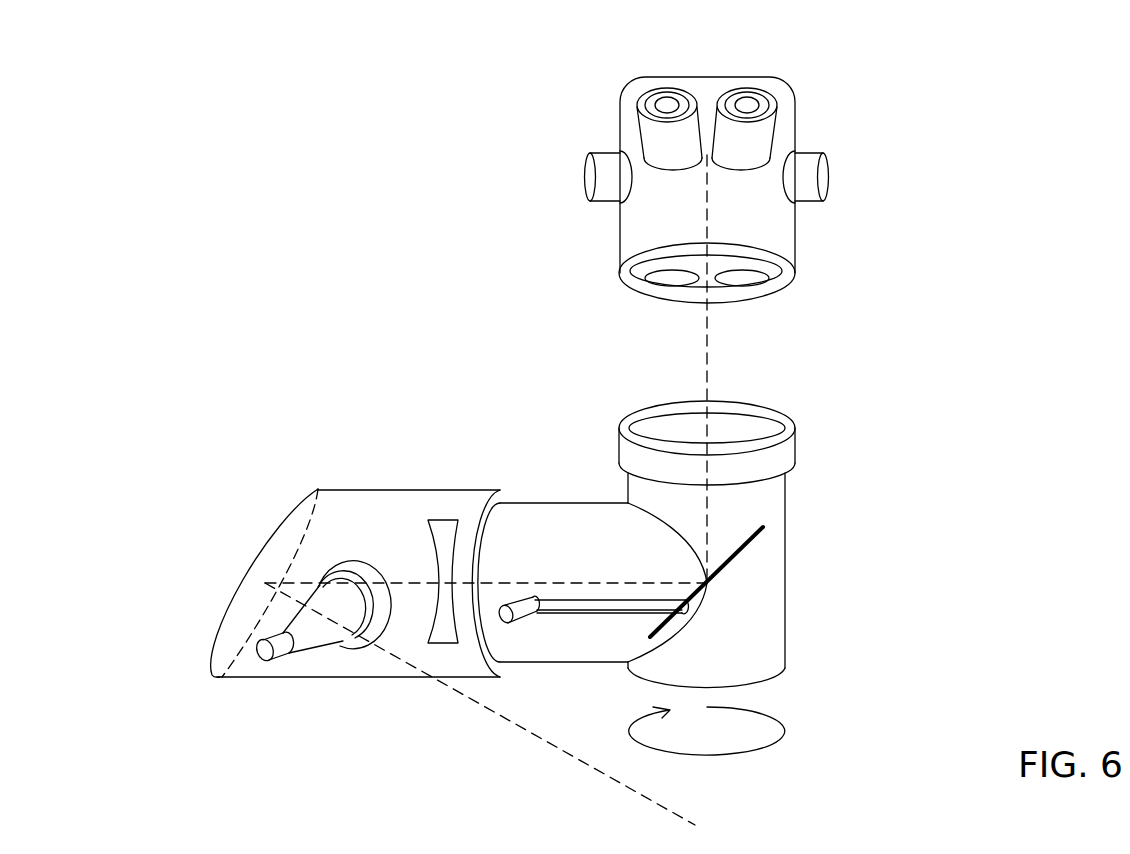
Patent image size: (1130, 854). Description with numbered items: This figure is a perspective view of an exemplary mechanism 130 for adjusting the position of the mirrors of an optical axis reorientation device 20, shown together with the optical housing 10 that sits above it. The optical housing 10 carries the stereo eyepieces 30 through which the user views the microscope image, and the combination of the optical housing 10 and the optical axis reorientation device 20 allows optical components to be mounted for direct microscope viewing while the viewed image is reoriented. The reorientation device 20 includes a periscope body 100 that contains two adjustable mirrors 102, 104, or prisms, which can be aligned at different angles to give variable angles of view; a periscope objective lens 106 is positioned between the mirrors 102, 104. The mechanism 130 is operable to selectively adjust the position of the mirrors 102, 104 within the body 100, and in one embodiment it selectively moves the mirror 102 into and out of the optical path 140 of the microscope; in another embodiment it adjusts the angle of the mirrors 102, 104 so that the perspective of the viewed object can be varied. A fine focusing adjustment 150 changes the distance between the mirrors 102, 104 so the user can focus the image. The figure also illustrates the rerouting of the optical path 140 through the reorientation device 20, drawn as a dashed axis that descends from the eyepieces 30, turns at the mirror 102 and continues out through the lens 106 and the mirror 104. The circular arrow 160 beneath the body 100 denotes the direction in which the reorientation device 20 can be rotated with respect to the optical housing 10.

The optical housing 10 is at (714, 160).
The stereo eyepieces 30 is at (778, 117).
The optical axis reorientation device 20 is at (559, 498).
The periscope body 100 is at (785, 615).
The mirror 102 is at (732, 562).
The mirror 104 is at (317, 527).
The periscope objective lens 106 is at (430, 545).
The mechanism 130 is at (520, 617).
The fine focusing adjustment 150 is at (310, 647).
The circular arrow 160 is at (780, 742).
The optical path 140 is at (707, 343).